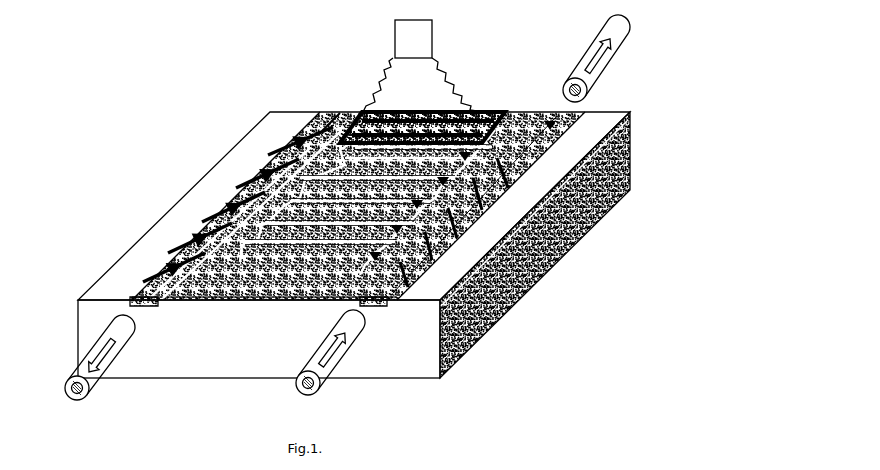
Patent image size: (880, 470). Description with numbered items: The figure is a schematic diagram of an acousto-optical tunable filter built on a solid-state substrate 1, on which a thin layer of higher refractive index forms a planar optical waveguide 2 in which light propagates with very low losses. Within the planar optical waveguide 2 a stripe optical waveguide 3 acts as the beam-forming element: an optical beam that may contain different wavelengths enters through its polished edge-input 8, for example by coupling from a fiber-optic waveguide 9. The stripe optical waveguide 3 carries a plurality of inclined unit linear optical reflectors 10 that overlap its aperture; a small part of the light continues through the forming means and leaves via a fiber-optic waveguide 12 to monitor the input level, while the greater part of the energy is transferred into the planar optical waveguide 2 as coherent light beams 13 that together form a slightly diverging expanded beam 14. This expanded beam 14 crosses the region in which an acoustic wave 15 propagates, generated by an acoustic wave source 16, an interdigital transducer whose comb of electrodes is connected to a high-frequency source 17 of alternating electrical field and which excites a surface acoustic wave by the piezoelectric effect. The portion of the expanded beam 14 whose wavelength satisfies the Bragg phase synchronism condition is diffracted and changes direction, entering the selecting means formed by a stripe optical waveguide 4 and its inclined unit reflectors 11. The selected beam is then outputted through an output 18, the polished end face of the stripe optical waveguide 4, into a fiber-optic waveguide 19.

The solid-state substrate 1 is at (530, 242).
The planar optical waveguide 2 is at (208, 305).
The stripe optical waveguide 3 is at (522, 168).
The stripe optical waveguide 4 is at (307, 128).
The polished edge-input 8 is at (387, 305).
The fiber-optic waveguide 9 is at (330, 377).
The inclined unit linear optical reflectors 10 is at (435, 265).
The inclined unit linear optical reflectors 11 is at (278, 155).
The fiber-optic waveguide 12 is at (590, 50).
The coherent light beams 13 is at (486, 150).
The expanded beam 14 is at (338, 112).
The acoustic wave 15 is at (233, 189).
The acoustic wave source 16 is at (395, 117).
The high-frequency source of alternating electrical field 17 is at (393, 47).
The output 18 is at (130, 305).
The fiber-optic waveguide 19 is at (98, 380).